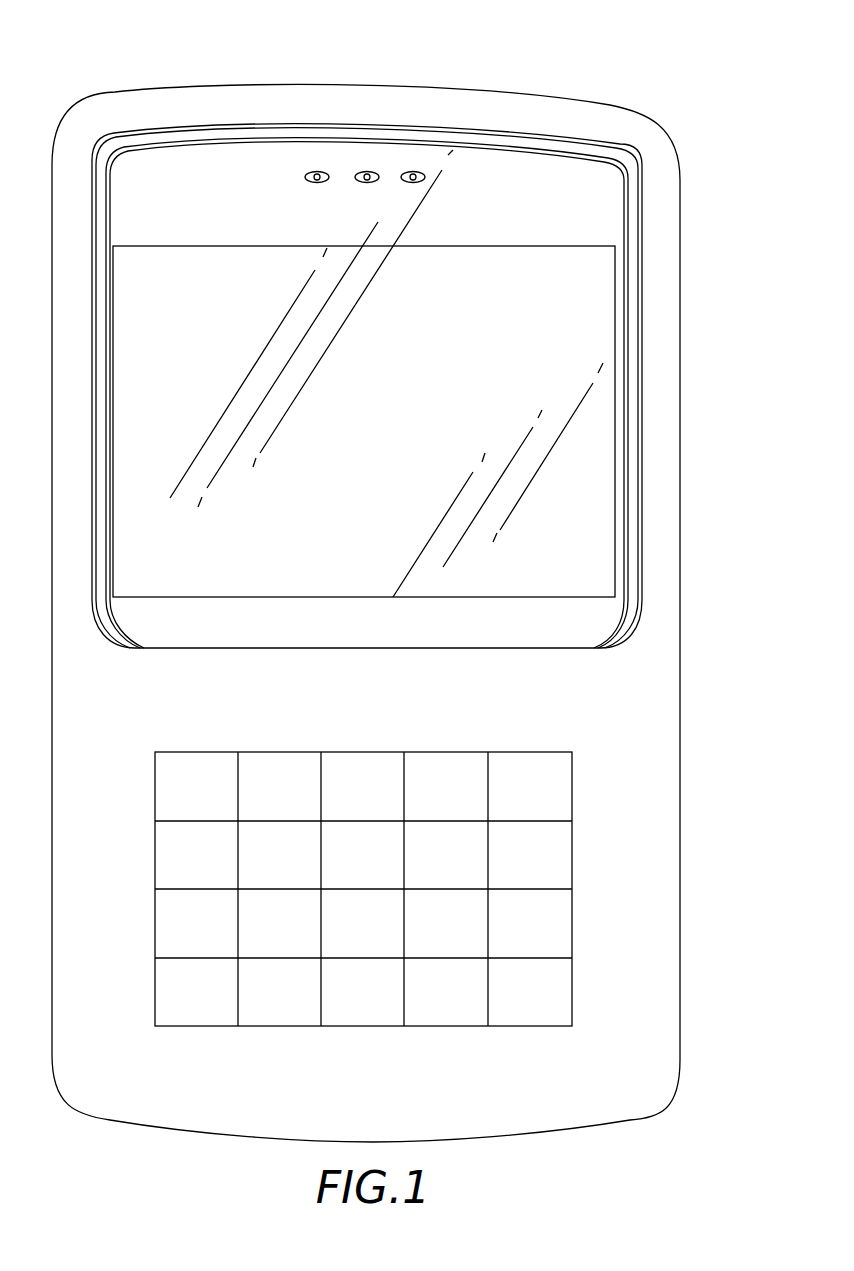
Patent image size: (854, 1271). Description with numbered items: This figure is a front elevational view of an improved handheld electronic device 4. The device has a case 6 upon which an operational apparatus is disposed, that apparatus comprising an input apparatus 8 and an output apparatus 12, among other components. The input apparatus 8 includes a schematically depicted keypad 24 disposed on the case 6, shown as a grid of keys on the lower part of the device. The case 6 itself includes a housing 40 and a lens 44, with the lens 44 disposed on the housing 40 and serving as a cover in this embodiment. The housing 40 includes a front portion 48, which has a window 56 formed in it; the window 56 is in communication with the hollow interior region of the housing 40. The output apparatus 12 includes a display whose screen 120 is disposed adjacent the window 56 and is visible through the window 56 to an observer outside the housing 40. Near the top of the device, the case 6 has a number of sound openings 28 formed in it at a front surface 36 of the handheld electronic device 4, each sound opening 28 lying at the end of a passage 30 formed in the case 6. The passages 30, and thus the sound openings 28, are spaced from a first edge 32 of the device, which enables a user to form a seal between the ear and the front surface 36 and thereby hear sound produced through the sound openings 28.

The handheld electronic device 4 is at (486, 73).
The case 6 is at (690, 193).
The input apparatus 8 is at (600, 747).
The output apparatus 12 is at (590, 517).
The keypad 24 is at (573, 858).
The sound openings 28 is at (363, 184).
The passages 30 is at (320, 171).
The first edge 32 is at (323, 84).
The front surface 36 is at (210, 165).
The housing 40 is at (690, 277).
The lens 44 is at (575, 175).
The front portion 48 is at (663, 363).
The window 56 is at (443, 250).
The screen 120 is at (605, 473).